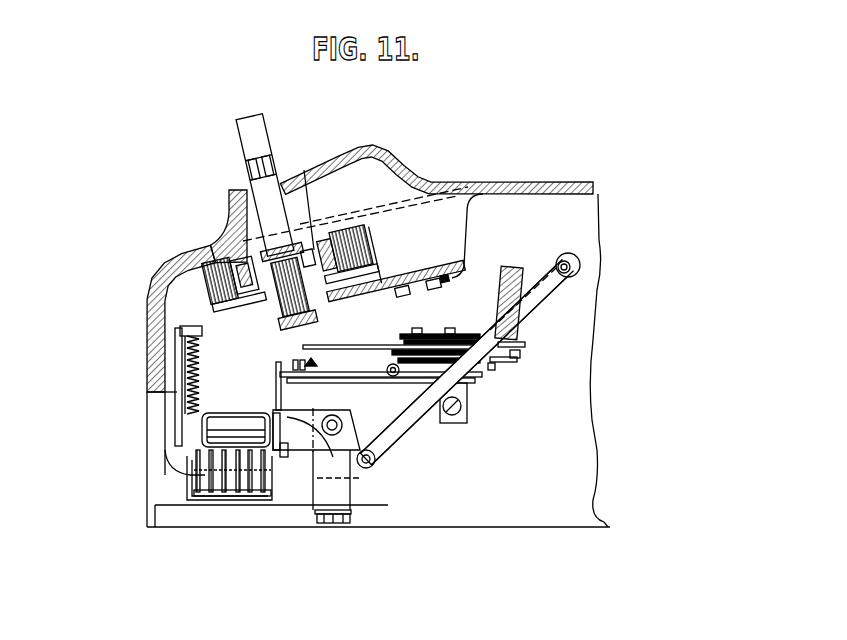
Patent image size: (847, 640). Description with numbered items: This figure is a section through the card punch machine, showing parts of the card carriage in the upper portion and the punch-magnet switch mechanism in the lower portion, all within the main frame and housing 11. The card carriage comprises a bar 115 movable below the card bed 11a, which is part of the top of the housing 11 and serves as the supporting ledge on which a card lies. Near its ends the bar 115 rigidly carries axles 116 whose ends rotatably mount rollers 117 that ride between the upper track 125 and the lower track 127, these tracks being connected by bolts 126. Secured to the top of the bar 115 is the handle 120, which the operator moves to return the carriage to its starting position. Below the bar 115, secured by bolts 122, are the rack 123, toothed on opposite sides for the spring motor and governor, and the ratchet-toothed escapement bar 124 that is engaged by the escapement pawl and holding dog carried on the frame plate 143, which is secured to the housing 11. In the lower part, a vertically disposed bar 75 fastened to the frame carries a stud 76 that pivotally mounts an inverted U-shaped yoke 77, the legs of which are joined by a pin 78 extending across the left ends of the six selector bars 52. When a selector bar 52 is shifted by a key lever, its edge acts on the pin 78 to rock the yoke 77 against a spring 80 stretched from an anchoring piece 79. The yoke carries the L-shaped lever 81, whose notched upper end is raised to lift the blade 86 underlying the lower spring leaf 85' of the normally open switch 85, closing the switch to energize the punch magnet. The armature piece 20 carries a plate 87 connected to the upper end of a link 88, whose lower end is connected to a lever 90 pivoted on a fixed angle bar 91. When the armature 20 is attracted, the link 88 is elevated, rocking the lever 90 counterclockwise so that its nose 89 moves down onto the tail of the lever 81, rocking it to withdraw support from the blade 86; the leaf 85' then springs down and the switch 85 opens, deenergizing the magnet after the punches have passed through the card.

The main frame and housing 11 is at (391, 172).
The card bed 11a is at (330, 178).
The card carriage bar 115 is at (237, 212).
The axles 116 is at (306, 242).
The rollers 117 is at (319, 238).
The handle 120 is at (246, 127).
The bolts 122 is at (284, 318).
The rack 123 is at (207, 268).
The escapement bar 124 is at (321, 322).
The upper track 125 is at (428, 196).
The bolts 126 is at (372, 240).
The lower track 127 is at (325, 238).
The frame plate 143 is at (466, 266).
The armature piece 20 is at (514, 268).
The anchoring piece 79 is at (188, 333).
The vertically disposed bar 75 is at (186, 397).
The spring 80 is at (192, 401).
The stud 76 is at (195, 450).
The yoke 77 is at (267, 497).
The pin 78 is at (207, 496).
The combination punch selector bars 52 is at (188, 472).
The switch 85 is at (354, 346).
The lower spring leaf 85' is at (419, 340).
The blade 86 is at (280, 372).
The L-shaped lever 81 is at (278, 384).
The plate 87 is at (540, 312).
The link 88 is at (400, 443).
The nose 89 is at (285, 457).
The lever 90 is at (345, 458).
The fixed angle bar 91 is at (349, 512).